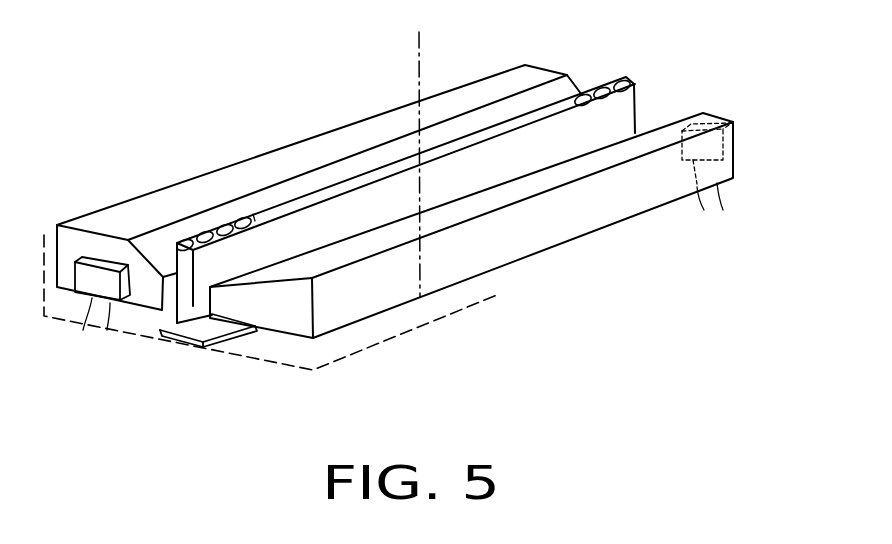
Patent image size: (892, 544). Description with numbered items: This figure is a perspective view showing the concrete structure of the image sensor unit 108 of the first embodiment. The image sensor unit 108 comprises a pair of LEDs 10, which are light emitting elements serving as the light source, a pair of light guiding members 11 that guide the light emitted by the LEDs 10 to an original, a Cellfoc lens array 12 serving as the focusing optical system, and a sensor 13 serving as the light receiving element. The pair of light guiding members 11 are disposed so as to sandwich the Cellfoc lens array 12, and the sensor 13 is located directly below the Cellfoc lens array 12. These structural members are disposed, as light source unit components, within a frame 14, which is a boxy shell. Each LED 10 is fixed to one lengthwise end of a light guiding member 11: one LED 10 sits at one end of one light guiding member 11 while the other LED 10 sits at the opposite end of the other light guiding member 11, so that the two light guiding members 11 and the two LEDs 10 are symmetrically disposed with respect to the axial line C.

The image sensor unit 108 is at (222, 134).
The light guiding member 11 is at (162, 197).
The Cellfoc lens array 12 is at (513, 117).
The LED 10 is at (95, 263).
The sensor 13 is at (170, 347).
The frame 14 is at (407, 337).
The axial line C is at (419, 148).